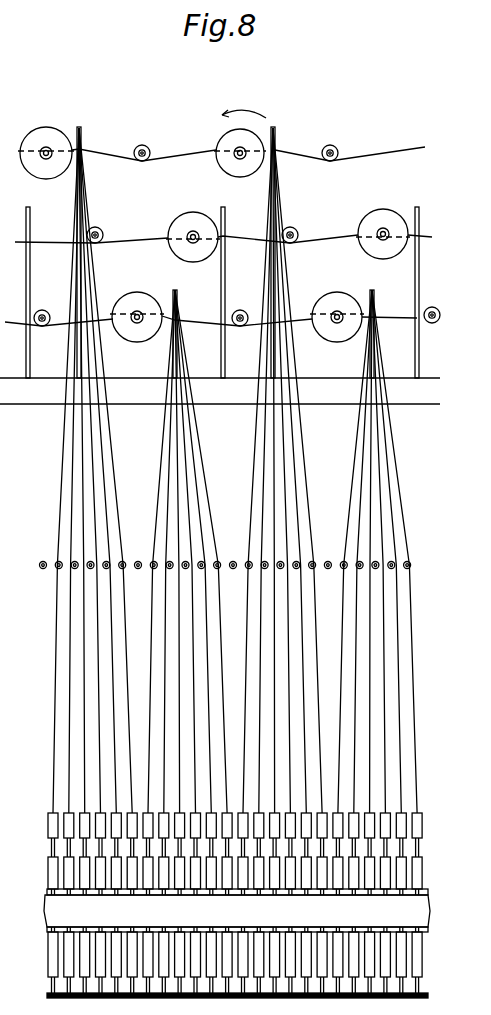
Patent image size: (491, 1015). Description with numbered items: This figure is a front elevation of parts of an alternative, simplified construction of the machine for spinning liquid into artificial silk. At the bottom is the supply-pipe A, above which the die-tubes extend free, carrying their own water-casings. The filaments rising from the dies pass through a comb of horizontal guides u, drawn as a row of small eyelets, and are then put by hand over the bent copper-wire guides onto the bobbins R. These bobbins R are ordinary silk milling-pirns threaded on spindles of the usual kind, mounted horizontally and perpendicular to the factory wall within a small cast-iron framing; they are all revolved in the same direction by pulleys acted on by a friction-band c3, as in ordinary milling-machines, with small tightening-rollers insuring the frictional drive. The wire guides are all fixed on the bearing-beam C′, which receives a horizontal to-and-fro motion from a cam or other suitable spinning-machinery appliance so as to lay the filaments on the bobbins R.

The friction-band c3 is at (248, 161).
The bobbins R is at (52, 180).
The bearing-beam C′ is at (220, 391).
The horizontal guides u is at (225, 558).
The supply-pipe A is at (237, 911).